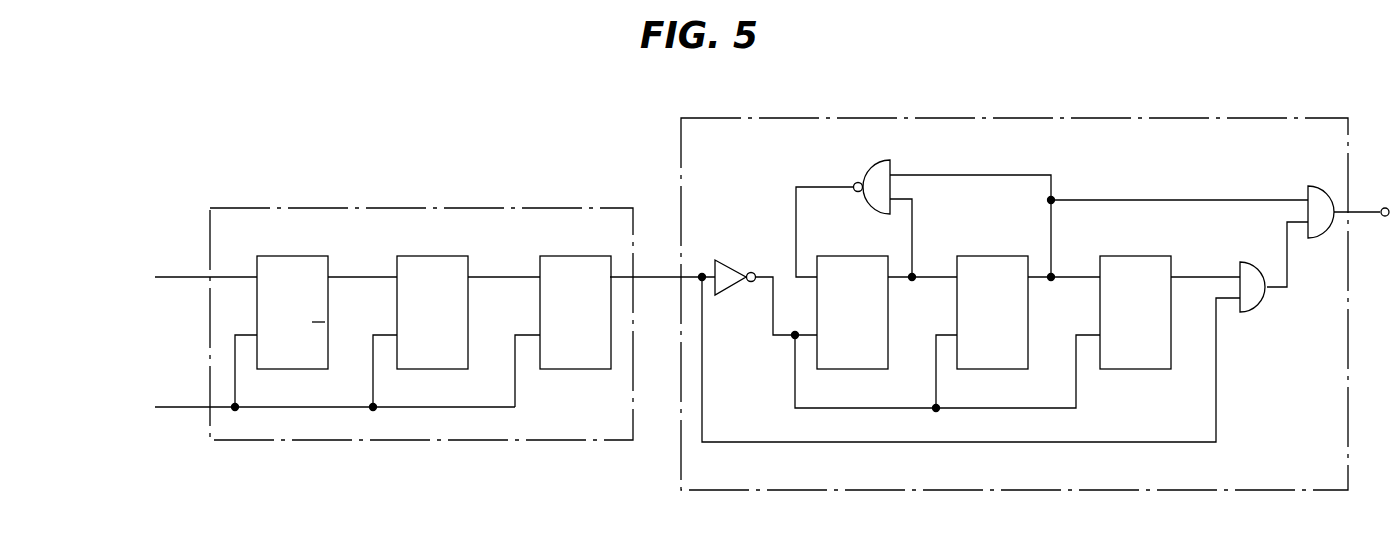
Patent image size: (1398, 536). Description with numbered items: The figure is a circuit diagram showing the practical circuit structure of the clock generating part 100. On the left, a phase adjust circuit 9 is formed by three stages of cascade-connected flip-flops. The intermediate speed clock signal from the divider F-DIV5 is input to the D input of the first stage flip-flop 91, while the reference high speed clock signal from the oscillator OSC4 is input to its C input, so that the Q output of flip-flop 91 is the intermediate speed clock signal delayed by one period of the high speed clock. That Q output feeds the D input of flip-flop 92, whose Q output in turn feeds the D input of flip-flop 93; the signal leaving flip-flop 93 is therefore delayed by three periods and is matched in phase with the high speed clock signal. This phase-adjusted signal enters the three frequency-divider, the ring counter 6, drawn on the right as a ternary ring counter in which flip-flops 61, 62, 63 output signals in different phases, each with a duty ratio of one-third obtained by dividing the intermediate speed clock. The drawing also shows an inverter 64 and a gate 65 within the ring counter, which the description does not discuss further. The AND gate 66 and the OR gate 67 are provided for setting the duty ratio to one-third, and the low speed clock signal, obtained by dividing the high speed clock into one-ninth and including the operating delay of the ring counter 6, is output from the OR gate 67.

The clock generating part 100 is at (635, 82).
The phase adjust circuit 9 is at (227, 212).
The frequency divider (ternary ring counter) 6 is at (697, 120).
The first stage flip-flop 91 is at (322, 258).
The second stage flip-flop 92 is at (468, 259).
The third stage flip-flop 93 is at (608, 259).
The inverter 64 is at (722, 262).
The NAND gate 65 is at (887, 170).
The flip-flop of ring counter 61 is at (870, 259).
The flip-flop of ring counter 62 is at (1008, 259).
The flip-flop of ring counter 63 is at (1160, 259).
The AND gate 66 is at (1245, 268).
The OR gate 67 is at (1312, 192).